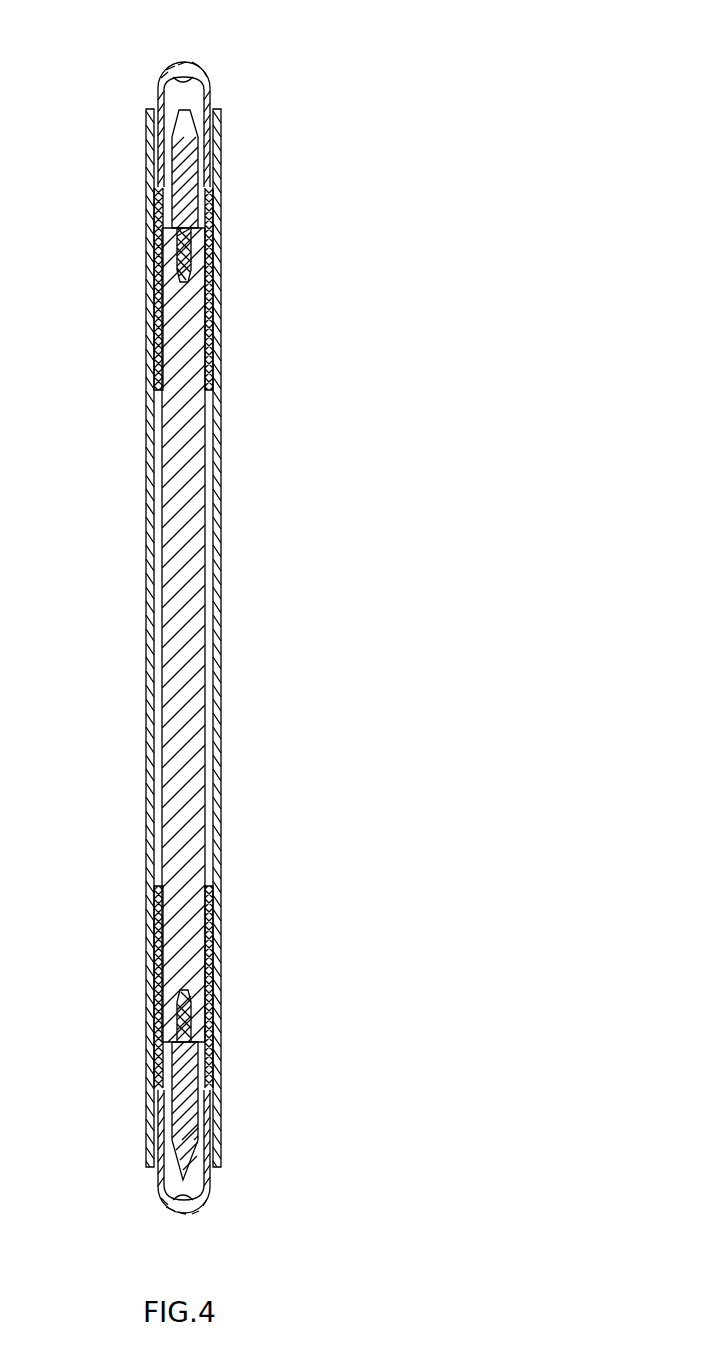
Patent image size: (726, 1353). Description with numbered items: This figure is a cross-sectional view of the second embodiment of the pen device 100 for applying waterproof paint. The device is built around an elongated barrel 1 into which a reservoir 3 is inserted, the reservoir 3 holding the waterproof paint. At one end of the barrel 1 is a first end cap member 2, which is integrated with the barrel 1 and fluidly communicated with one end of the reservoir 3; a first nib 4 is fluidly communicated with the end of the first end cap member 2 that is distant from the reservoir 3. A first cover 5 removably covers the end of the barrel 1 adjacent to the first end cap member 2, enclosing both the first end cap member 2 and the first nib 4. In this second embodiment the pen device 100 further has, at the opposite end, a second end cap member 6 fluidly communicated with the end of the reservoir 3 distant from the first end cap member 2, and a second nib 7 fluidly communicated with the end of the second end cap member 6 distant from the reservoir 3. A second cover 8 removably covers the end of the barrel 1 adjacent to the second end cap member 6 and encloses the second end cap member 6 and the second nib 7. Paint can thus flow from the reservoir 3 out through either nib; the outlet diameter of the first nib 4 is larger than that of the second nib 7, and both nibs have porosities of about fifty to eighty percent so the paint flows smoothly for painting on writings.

The pen device 100 is at (331, 511).
The barrel 1 is at (219, 657).
The first end cap member 2 is at (210, 195).
The reservoir 3 is at (173, 709).
The first nib 4 is at (179, 152).
The first cover 5 is at (210, 78).
The second end cap member 6 is at (217, 1049).
The second nib 7 is at (180, 1097).
The second cover 8 is at (205, 1203).